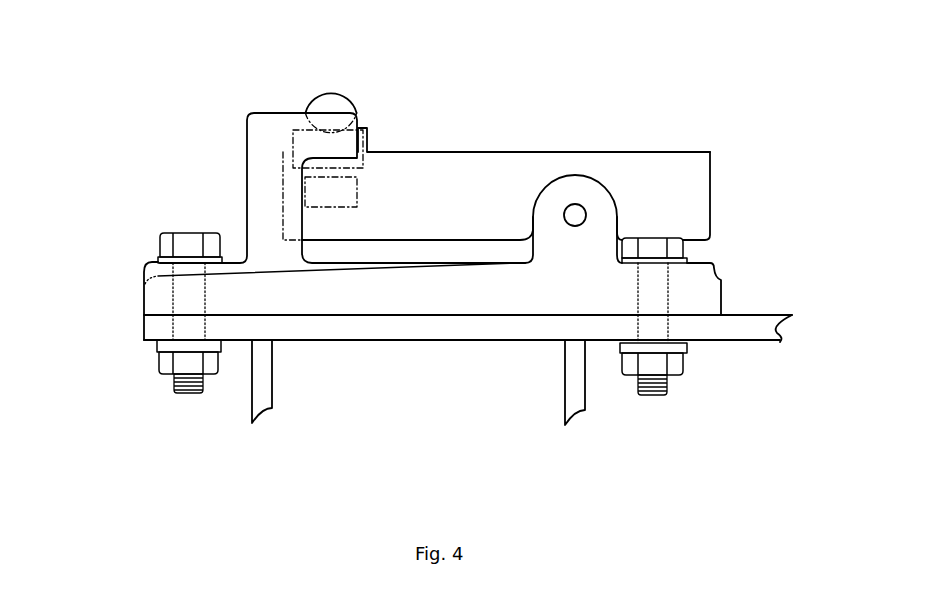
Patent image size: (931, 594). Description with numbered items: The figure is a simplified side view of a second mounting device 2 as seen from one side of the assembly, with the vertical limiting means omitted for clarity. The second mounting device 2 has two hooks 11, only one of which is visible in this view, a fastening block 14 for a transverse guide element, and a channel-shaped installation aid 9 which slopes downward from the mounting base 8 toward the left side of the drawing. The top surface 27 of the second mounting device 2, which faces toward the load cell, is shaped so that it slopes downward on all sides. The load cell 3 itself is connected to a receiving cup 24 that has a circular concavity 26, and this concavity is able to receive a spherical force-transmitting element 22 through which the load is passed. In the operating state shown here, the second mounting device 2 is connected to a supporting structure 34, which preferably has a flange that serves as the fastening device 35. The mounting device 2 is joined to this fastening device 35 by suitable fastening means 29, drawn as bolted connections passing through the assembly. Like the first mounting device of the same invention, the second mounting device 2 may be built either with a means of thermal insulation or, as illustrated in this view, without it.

The second mounting device 2 is at (458, 285).
The load cell 3 is at (458, 188).
The mounting base 8 is at (697, 255).
The channel-shaped installation aid 9 is at (252, 271).
The hook 11 is at (262, 150).
The fastening block 14 is at (590, 205).
The spherical force-transmitting element 22 is at (328, 105).
The receiving cup 24 is at (332, 188).
The circular concavity 26 is at (352, 148).
The top surface 27 is at (190, 261).
The fastening means 29 is at (187, 363).
The supporting structure 34 is at (270, 397).
The fastening device 35 is at (735, 332).